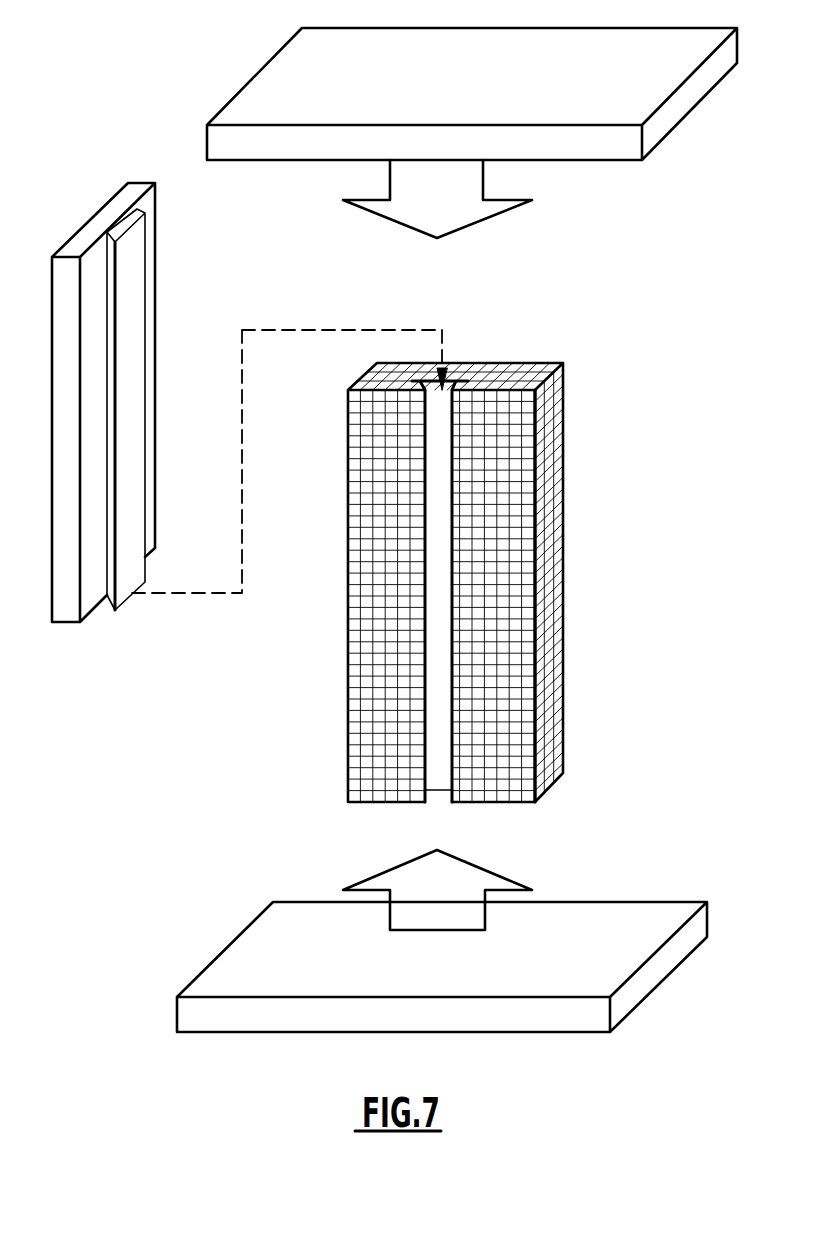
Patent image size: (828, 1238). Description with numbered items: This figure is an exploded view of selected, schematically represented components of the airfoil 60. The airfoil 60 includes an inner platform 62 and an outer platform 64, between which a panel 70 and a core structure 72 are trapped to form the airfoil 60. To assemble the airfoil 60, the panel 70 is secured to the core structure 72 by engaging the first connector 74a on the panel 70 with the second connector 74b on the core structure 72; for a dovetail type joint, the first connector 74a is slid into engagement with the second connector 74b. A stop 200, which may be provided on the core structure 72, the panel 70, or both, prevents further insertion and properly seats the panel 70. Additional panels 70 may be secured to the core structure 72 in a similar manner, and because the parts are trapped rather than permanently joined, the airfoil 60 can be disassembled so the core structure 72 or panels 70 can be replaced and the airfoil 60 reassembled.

The airfoil 60 is at (372, 543).
The inner platform 62 is at (625, 1000).
The outer platform 64 is at (655, 127).
The panel 70 is at (63, 467).
The core structure 72 is at (567, 520).
The first connector 74a is at (135, 295).
The second connector 74b is at (440, 403).
The stop 200 is at (437, 790).